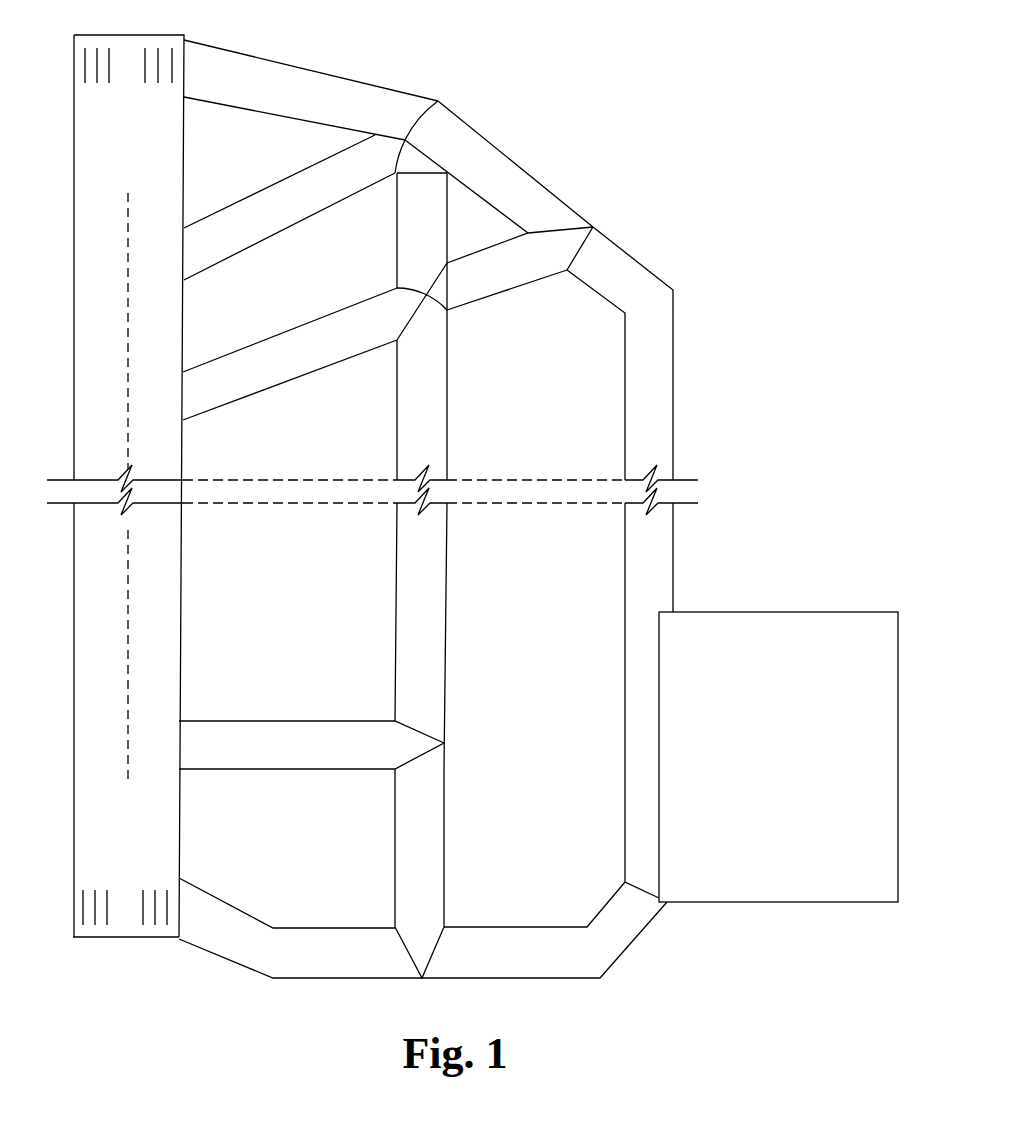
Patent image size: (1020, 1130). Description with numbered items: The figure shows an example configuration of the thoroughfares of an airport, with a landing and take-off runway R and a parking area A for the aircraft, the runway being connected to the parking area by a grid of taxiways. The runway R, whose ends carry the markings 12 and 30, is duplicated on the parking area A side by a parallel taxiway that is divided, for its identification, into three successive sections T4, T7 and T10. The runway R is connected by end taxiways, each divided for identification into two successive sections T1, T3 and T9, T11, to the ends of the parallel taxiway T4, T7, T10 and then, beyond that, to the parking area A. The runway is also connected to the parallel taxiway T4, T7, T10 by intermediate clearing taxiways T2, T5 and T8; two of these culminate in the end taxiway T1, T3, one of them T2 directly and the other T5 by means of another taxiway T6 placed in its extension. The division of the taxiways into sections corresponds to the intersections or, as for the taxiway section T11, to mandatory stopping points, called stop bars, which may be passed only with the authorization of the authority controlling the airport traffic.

The first end of strip 12 is at (129, 486).
The second end of strip 30 is at (126, 885).
The landing and take-off runway R is at (92, 293).
The parking area A is at (732, 564).
The end taxiway section T1 is at (311, 90).
The intermediate clearing taxiway T2 is at (294, 207).
The end taxiway section T3 is at (499, 167).
The parallel taxiway section T4 is at (422, 241).
The intermediate clearing taxiway T5 is at (315, 341).
The taxiway T6 is at (520, 268).
The parallel taxiway section T7 is at (421, 539).
The intermediate clearing taxiway T8 is at (311, 745).
The end taxiway section T9 is at (300, 928).
The parallel taxiway section T10 is at (417, 873).
The end taxiway section T11 is at (544, 930).